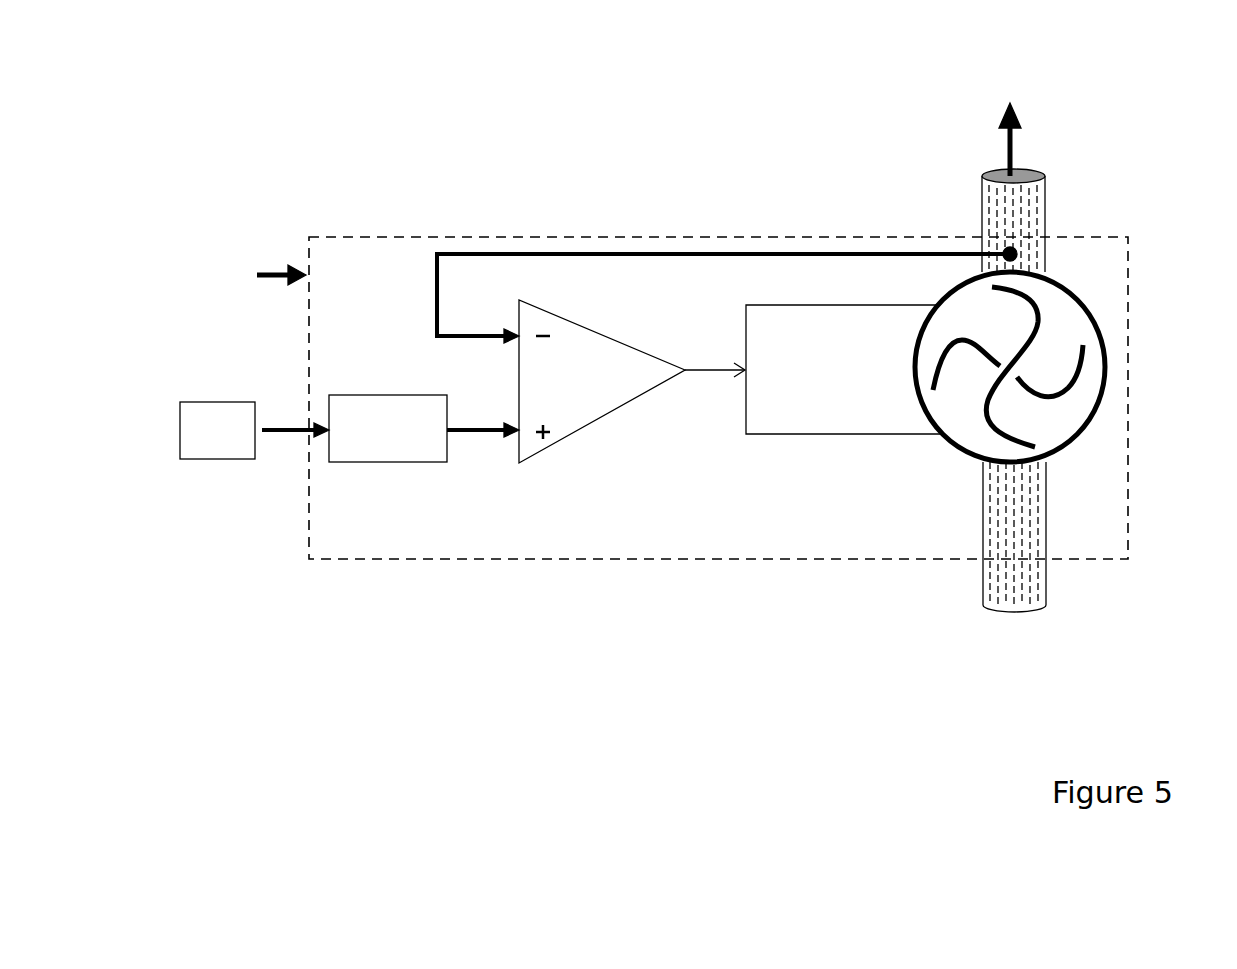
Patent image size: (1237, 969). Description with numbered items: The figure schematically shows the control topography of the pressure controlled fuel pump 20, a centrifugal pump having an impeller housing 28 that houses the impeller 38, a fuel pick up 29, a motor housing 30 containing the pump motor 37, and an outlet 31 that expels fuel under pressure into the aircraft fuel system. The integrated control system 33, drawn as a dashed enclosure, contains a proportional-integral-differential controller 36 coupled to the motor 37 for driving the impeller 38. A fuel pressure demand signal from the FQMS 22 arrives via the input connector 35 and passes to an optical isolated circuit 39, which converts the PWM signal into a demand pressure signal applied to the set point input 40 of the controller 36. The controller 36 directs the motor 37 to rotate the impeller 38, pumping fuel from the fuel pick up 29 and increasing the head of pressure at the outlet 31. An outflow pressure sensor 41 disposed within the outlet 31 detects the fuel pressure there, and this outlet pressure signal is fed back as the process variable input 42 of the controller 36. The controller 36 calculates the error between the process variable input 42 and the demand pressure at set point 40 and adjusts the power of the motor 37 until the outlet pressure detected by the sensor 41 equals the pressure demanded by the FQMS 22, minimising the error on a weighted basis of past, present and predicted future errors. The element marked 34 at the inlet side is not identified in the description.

The pressure controlled fuel pump 20 is at (628, 120).
The FQMS 22 is at (217, 430).
The impeller housing 28 is at (1105, 376).
The fuel pick up 29 is at (1025, 593).
The motor housing 30 is at (865, 434).
The outlet 31 is at (1025, 205).
The integrated control system 33 is at (565, 559).
The input 34 is at (311, 262).
The input connector 35 is at (287, 435).
The PID controller 36 is at (565, 408).
The pump motor 37 is at (768, 377).
The impeller 38 is at (1035, 335).
The optical isolated circuit 39 is at (372, 427).
The set point input 40 is at (519, 440).
The outflow pressure sensor 41 is at (998, 235).
The process variable input 42 is at (512, 323).